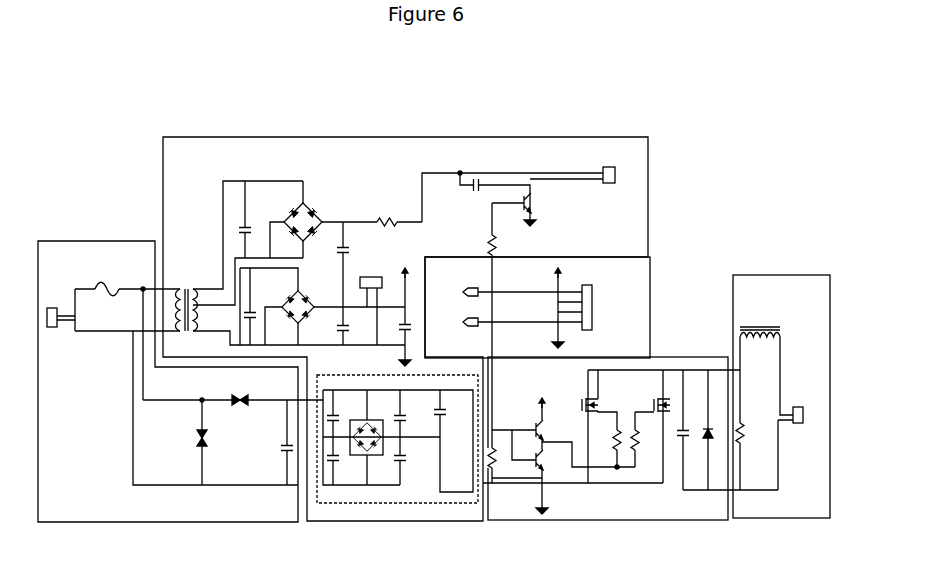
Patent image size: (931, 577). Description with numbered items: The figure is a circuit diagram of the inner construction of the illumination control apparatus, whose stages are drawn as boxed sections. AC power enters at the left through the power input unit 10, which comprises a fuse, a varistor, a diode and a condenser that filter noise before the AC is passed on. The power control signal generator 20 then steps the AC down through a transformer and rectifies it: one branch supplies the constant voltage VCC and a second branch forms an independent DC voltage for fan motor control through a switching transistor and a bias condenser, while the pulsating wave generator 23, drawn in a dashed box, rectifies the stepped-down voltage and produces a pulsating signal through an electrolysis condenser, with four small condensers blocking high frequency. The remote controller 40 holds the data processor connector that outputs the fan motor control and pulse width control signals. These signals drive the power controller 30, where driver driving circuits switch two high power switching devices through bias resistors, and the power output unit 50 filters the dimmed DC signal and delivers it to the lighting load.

The power input unit 10 is at (83, 487).
The power control signal generator 20 is at (418, 147).
The pulsating wave generator 23 is at (417, 493).
The power controller 30 is at (657, 512).
The remote controller 40 is at (593, 312).
The power output unit 50 is at (783, 510).